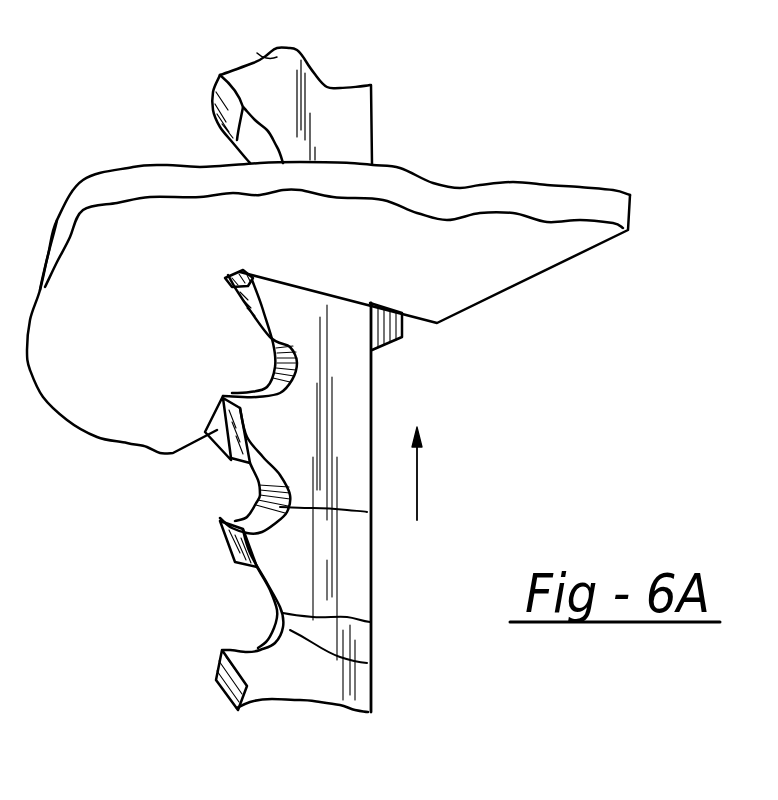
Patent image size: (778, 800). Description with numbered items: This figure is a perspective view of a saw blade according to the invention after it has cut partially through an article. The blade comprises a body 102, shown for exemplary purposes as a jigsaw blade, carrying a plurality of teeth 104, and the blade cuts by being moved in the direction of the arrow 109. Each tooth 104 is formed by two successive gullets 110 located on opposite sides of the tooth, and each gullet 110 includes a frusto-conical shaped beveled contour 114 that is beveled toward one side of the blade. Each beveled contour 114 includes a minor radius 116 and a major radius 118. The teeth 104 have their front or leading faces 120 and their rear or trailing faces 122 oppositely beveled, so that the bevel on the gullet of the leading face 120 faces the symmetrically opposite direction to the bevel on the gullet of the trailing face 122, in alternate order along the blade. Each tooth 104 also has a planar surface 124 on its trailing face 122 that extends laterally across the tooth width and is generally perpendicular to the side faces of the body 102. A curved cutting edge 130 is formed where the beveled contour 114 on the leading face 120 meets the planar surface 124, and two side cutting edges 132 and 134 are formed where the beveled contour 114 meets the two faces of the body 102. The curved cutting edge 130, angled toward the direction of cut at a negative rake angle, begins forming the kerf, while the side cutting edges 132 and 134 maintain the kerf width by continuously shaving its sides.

The body 102 is at (353, 593).
The teeth 104 is at (255, 573).
The arrow 109 is at (420, 490).
The gullets 110 is at (262, 617).
The beveled contour 114 is at (367, 512).
The minor radius 116 is at (367, 663).
The major radius 118 is at (222, 648).
The leading face 120 is at (243, 520).
The trailing face 122 is at (240, 465).
The planar surface 124 is at (210, 437).
The curved cutting edge 130 is at (222, 404).
The side cutting edge 132 is at (297, 363).
The side cutting edge 134 is at (273, 347).